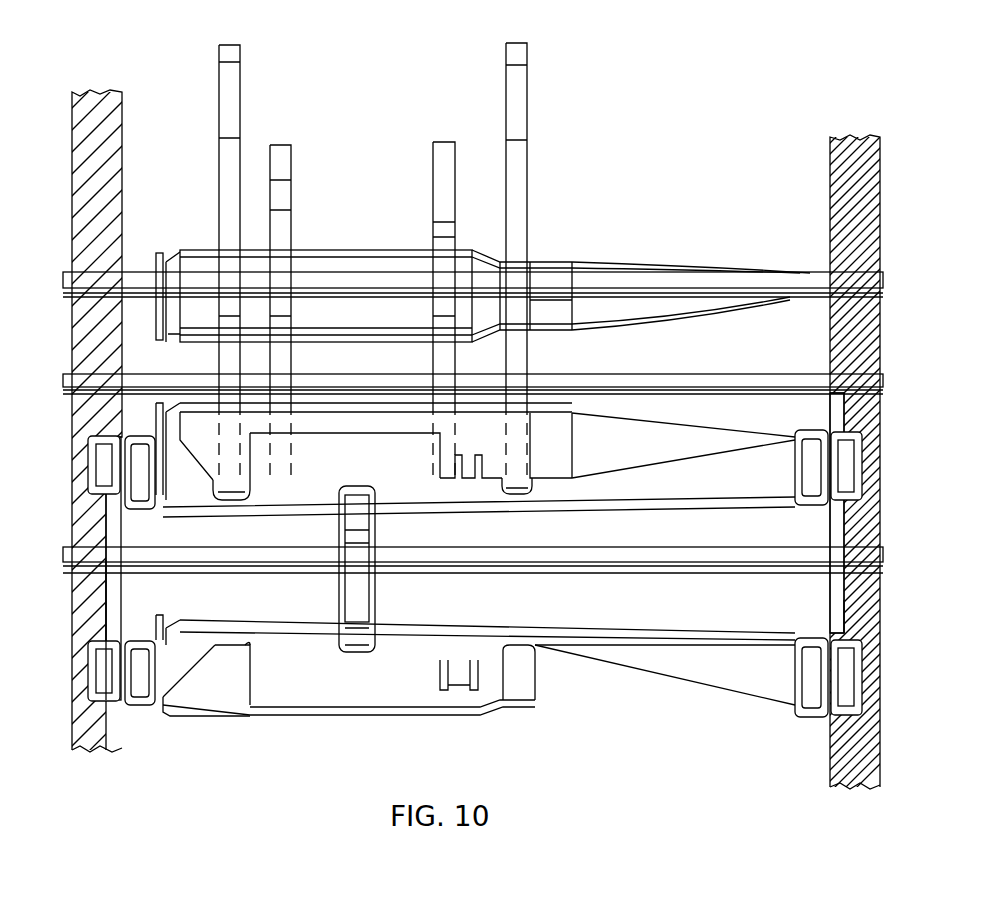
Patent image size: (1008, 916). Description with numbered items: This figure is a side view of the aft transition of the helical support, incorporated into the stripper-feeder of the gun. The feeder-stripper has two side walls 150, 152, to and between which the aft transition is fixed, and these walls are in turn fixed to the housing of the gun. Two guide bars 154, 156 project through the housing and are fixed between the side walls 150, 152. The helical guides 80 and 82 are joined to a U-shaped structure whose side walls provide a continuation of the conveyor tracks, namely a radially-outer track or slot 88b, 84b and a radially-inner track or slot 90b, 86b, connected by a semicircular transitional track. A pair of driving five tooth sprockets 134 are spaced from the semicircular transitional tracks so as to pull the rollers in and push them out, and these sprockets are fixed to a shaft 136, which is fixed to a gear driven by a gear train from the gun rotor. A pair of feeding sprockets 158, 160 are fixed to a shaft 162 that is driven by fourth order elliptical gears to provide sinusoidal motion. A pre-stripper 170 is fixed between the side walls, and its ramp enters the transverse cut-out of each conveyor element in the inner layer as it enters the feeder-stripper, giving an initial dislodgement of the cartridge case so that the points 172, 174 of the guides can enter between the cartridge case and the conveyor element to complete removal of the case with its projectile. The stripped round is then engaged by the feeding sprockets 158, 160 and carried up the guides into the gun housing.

The helical guide 80 is at (96, 616).
The helical guide 82 is at (858, 635).
The radially-outer track 84b is at (90, 696).
The radially-inner track 86b is at (90, 450).
The radially-outer track 88b is at (858, 688).
The radially-inner track 90b is at (858, 450).
The driving five tooth sprocket 134 is at (119, 604).
The shaft 136 is at (617, 560).
The side wall 150 is at (830, 162).
The side wall 152 is at (122, 164).
The guide bar 154 is at (241, 62).
The guide bar 156 is at (528, 62).
The feeding sprocket 158 is at (456, 162).
The feeding sprocket 160 is at (292, 164).
The shaft 162 is at (651, 287).
The pre-stripper 170 is at (358, 601).
The point of guide 172 is at (250, 496).
The point of guide 174 is at (505, 490).